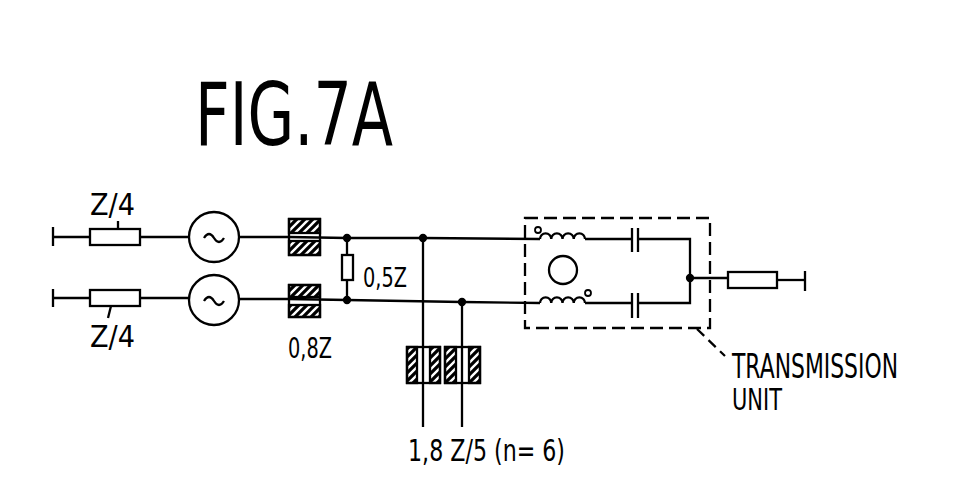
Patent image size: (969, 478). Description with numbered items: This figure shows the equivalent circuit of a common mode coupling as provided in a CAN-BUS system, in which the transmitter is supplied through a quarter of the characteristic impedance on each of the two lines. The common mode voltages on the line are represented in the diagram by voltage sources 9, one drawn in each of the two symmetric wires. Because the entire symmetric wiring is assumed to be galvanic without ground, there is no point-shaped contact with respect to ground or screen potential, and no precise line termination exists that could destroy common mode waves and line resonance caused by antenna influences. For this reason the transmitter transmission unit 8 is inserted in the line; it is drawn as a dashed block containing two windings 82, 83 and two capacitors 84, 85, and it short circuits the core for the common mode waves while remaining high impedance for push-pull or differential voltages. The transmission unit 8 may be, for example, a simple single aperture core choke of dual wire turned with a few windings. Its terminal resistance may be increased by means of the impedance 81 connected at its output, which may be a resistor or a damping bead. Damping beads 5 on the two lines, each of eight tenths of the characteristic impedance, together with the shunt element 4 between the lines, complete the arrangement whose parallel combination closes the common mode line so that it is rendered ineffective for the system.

The shunt resistor 0,5Z 4 is at (352, 266).
The attenuator 5 is at (300, 219).
The transmission unit 8 is at (653, 277).
The voltage sources 9 is at (215, 219).
The impedance 81 is at (752, 288).
The winding 82 is at (563, 236).
The winding 83 is at (562, 307).
The capacitor 84 is at (640, 233).
The capacitor 85 is at (642, 318).